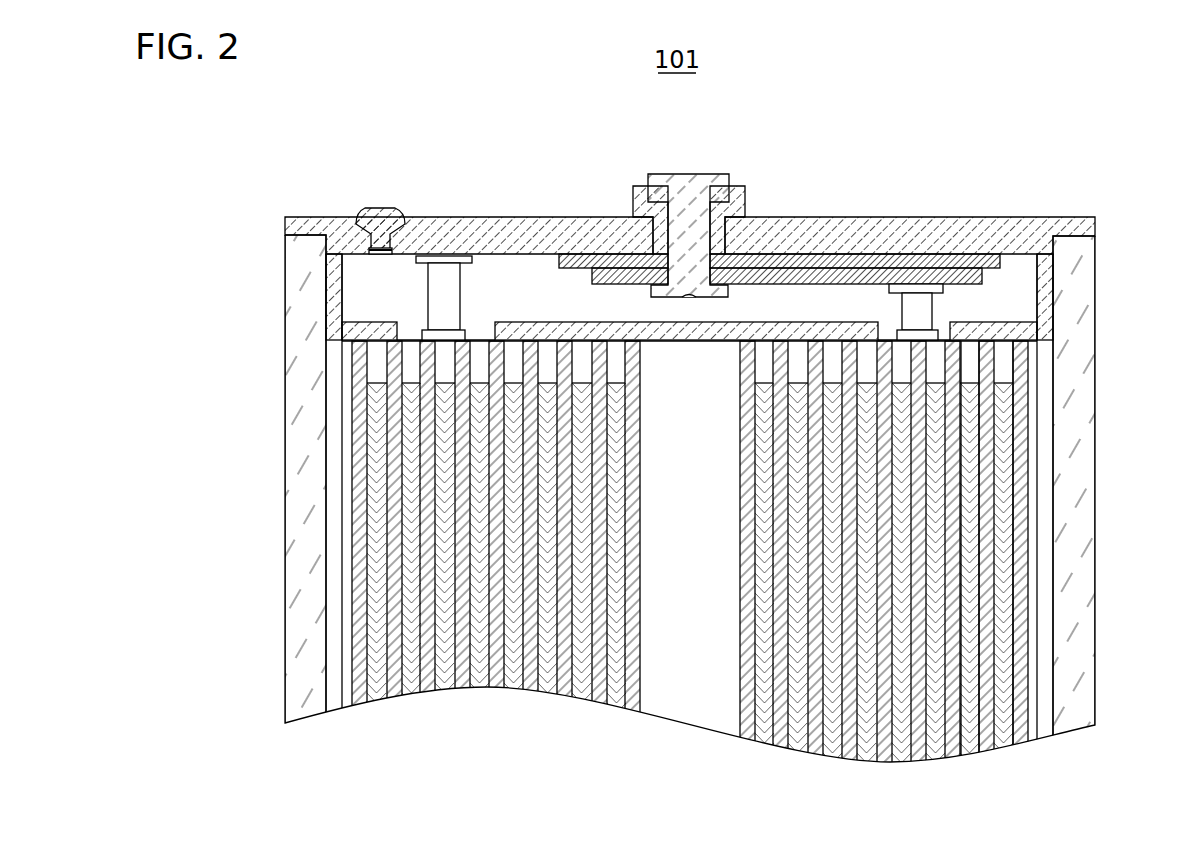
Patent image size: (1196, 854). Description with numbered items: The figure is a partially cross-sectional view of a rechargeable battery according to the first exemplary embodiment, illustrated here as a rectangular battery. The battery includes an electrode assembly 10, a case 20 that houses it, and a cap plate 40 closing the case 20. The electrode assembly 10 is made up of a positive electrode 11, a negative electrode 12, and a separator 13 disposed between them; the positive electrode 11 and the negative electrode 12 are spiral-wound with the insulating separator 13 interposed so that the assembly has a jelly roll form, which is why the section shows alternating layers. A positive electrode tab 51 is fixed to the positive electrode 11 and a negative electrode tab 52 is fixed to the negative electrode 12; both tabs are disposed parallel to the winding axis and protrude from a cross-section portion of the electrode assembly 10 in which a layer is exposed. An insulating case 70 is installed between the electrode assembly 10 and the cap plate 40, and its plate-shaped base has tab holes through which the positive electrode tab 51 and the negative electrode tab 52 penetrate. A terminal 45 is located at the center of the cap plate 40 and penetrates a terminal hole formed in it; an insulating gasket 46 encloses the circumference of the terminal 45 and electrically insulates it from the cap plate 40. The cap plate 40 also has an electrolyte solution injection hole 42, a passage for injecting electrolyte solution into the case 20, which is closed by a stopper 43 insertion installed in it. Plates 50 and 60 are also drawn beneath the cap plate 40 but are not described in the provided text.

The electrode assembly 10 is at (766, 562).
The positive electrode 11 is at (1005, 567).
The negative electrode 12 is at (972, 625).
The separator 13 is at (1020, 520).
The case 20 is at (1075, 374).
The cap plate 40 is at (1040, 232).
The electrolyte solution injection hole 42 is at (370, 240).
The stopper 43 is at (377, 213).
The terminal 45 is at (698, 185).
The insulating gasket 46 is at (737, 193).
The upper plate 50 is at (987, 258).
The positive electrode tab 51 is at (437, 300).
The negative electrode tab 52 is at (915, 303).
The lower plate 60 is at (957, 277).
The insulating case 70 is at (1040, 282).